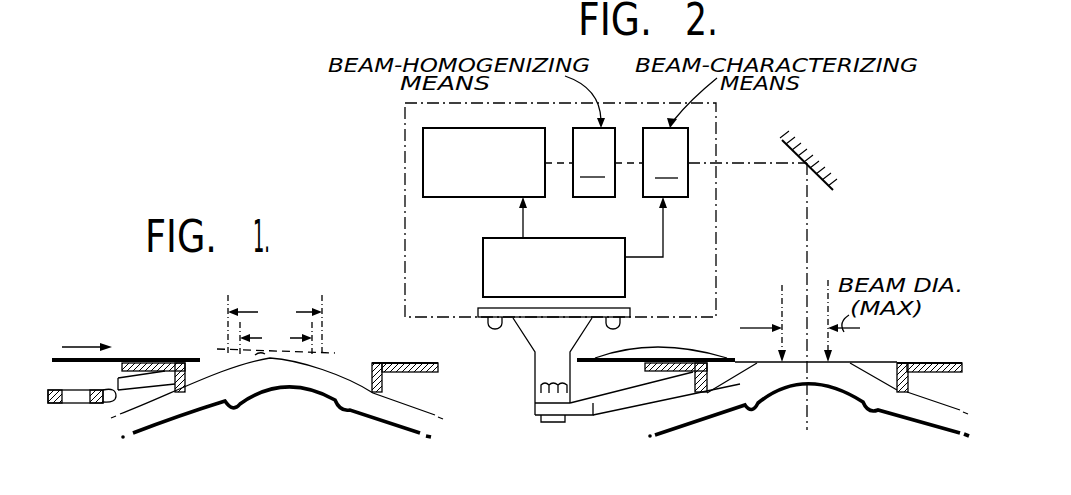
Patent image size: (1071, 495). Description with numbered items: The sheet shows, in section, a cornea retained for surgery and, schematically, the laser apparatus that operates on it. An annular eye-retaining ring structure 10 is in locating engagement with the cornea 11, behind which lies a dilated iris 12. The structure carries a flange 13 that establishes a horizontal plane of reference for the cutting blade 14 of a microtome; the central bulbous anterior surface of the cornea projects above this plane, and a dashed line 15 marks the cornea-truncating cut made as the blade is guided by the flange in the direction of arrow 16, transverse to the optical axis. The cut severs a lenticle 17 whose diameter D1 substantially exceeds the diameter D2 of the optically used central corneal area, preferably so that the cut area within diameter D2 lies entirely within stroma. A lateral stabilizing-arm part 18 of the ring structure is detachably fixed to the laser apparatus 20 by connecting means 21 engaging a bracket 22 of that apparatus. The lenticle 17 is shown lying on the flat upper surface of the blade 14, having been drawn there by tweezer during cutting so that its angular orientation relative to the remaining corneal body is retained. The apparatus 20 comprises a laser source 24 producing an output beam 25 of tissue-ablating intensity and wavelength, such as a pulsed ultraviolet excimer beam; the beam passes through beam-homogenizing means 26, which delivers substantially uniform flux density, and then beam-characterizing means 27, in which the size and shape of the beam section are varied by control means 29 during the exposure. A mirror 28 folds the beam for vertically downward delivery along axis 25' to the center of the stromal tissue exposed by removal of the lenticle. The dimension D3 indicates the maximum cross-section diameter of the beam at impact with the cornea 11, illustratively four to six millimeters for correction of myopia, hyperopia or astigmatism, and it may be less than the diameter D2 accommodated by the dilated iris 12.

In FIG. 2, the annular eye-retaining ring structure 10 is at (936, 363).
In FIG. 1, the annular eye-retaining ring structure 10 is at (390, 356).
In FIG. 2, the cornea 11 is at (885, 366).
In FIG. 1, the cornea 11 is at (345, 369).
In FIG. 2, the dilated iris 12 is at (808, 411).
In FIG. 1, the dilated iris 12 is at (300, 420).
In FIG. 1, the flange 13 is at (413, 372).
In FIG. 2, the cutting blade 14 is at (613, 364).
In FIG. 1, the cutting blade 14 is at (148, 358).
In FIG. 1, the dashed line 15 is at (262, 346).
In FIG. 1, the arrow 16 is at (82, 346).
In FIG. 2, the lenticle 17 is at (648, 349).
In FIG. 2, the lateral stabilizing-arm part 18 is at (606, 416).
In FIG. 1, the lateral stabilizing-arm part 18 is at (100, 406).
In FIG. 2, the laser apparatus 20 is at (405, 201).
In FIG. 2, the detachably connecting means 21 is at (541, 378).
In FIG. 2, the bracket 22 is at (526, 340).
In FIG. 2, the laser source 24 is at (423, 138).
In FIG. 2, the output beam 25 is at (676, 132).
In FIG. 2, the axis 25' is at (777, 296).
In FIG. 2, the beam-homogenizing means 26 is at (594, 162).
In FIG. 2, the beam-characterizing means 27 is at (665, 162).
In FIG. 2, the mirror 28 is at (786, 148).
In FIG. 2, the control means 29 is at (491, 238).
In FIG. 1, the diameter of the lenticle D1 is at (275, 325).
In FIG. 1, the diameter of the optically used central area D2 is at (276, 338).
In FIG. 2, the maximum beam diameter D3 is at (793, 324).